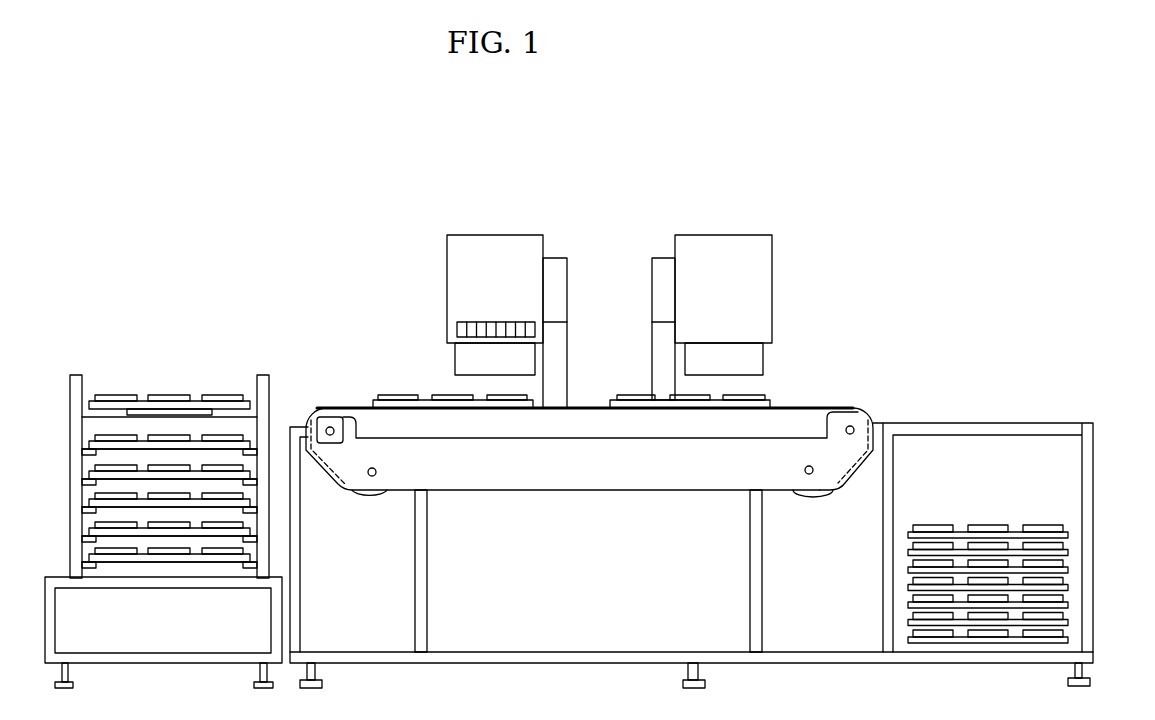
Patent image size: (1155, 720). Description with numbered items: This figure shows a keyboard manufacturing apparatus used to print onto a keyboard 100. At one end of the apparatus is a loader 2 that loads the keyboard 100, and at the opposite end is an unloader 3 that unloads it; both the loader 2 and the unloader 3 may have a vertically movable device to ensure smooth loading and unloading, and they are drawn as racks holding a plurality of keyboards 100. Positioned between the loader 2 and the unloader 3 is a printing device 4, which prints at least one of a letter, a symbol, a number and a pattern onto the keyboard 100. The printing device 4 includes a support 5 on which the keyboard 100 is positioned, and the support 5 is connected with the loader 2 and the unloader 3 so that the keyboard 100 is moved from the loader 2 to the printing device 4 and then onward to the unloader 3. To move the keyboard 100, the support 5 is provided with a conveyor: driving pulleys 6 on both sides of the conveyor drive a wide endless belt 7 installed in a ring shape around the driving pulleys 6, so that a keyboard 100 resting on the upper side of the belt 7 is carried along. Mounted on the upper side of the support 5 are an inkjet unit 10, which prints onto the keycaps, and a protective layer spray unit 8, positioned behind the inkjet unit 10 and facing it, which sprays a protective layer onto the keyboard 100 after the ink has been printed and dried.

The loader 2 is at (118, 397).
The unloader 3 is at (1060, 523).
The printing device 4 is at (322, 404).
The support 5 is at (937, 395).
The driving pulleys 6 is at (808, 489).
The belt 7 is at (829, 412).
The protective layer spray unit 8 is at (727, 243).
The inkjet unit 10 is at (487, 243).
The keyboard 100 is at (403, 397).